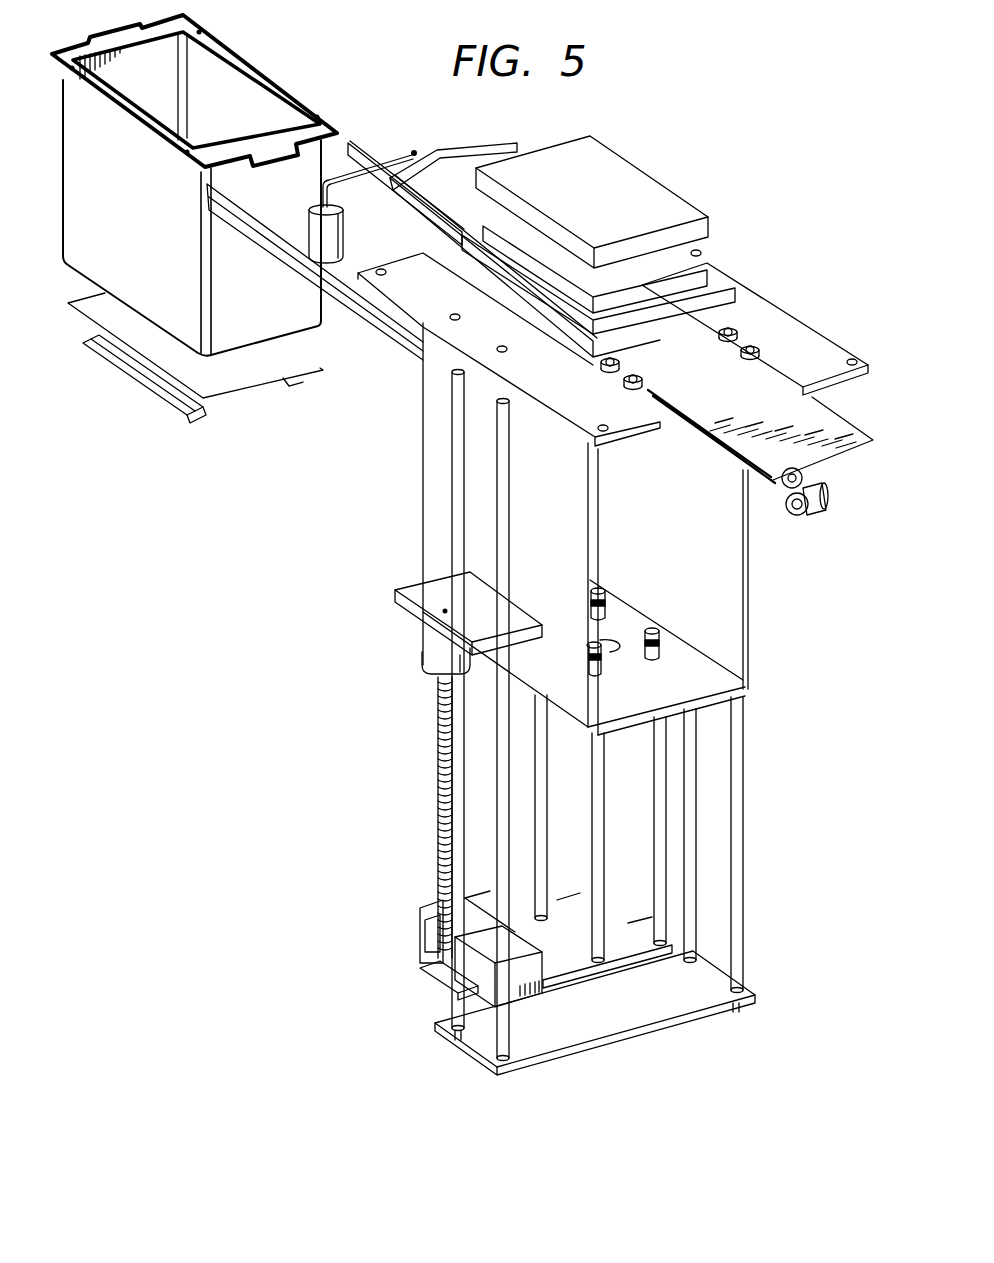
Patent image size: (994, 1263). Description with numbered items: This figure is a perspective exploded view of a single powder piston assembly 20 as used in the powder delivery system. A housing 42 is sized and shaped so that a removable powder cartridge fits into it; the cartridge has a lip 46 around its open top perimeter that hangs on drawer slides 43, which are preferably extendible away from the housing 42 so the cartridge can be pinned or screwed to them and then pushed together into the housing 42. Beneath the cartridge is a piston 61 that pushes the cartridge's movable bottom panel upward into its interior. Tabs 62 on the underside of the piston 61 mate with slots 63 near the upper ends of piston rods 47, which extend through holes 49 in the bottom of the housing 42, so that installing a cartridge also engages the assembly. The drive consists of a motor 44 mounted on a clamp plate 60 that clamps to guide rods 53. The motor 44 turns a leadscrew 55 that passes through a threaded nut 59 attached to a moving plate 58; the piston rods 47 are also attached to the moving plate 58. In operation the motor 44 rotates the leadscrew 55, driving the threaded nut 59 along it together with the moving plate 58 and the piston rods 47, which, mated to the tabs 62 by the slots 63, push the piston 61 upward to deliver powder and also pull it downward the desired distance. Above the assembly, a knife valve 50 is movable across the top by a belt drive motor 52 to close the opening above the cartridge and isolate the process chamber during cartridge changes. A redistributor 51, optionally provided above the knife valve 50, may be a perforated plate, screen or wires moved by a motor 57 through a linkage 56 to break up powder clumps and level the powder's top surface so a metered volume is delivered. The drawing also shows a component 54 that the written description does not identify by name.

The powder piston assembly 20 is at (720, 132).
The housing 42 is at (561, 544).
The drawer slides 43 is at (363, 146).
The motor 44 is at (430, 650).
The lip 46 is at (236, 62).
The piston rods 47 is at (659, 816).
The holes 49 is at (670, 658).
The knife valve 50 is at (749, 407).
The redistributor 51 is at (606, 199).
The belt drive motor 52 is at (813, 504).
The guide rods 53 is at (500, 487).
The frame plate 54 is at (695, 268).
The leadscrew 55 is at (437, 849).
The linkage 56 is at (473, 150).
The motor 57 is at (345, 235).
The moving plate 58 is at (641, 947).
The threaded nut 59 is at (438, 983).
The clamp plate 60 is at (415, 588).
The piston 61 is at (247, 390).
The tabs 62 is at (131, 383).
The slots 63 is at (673, 637).